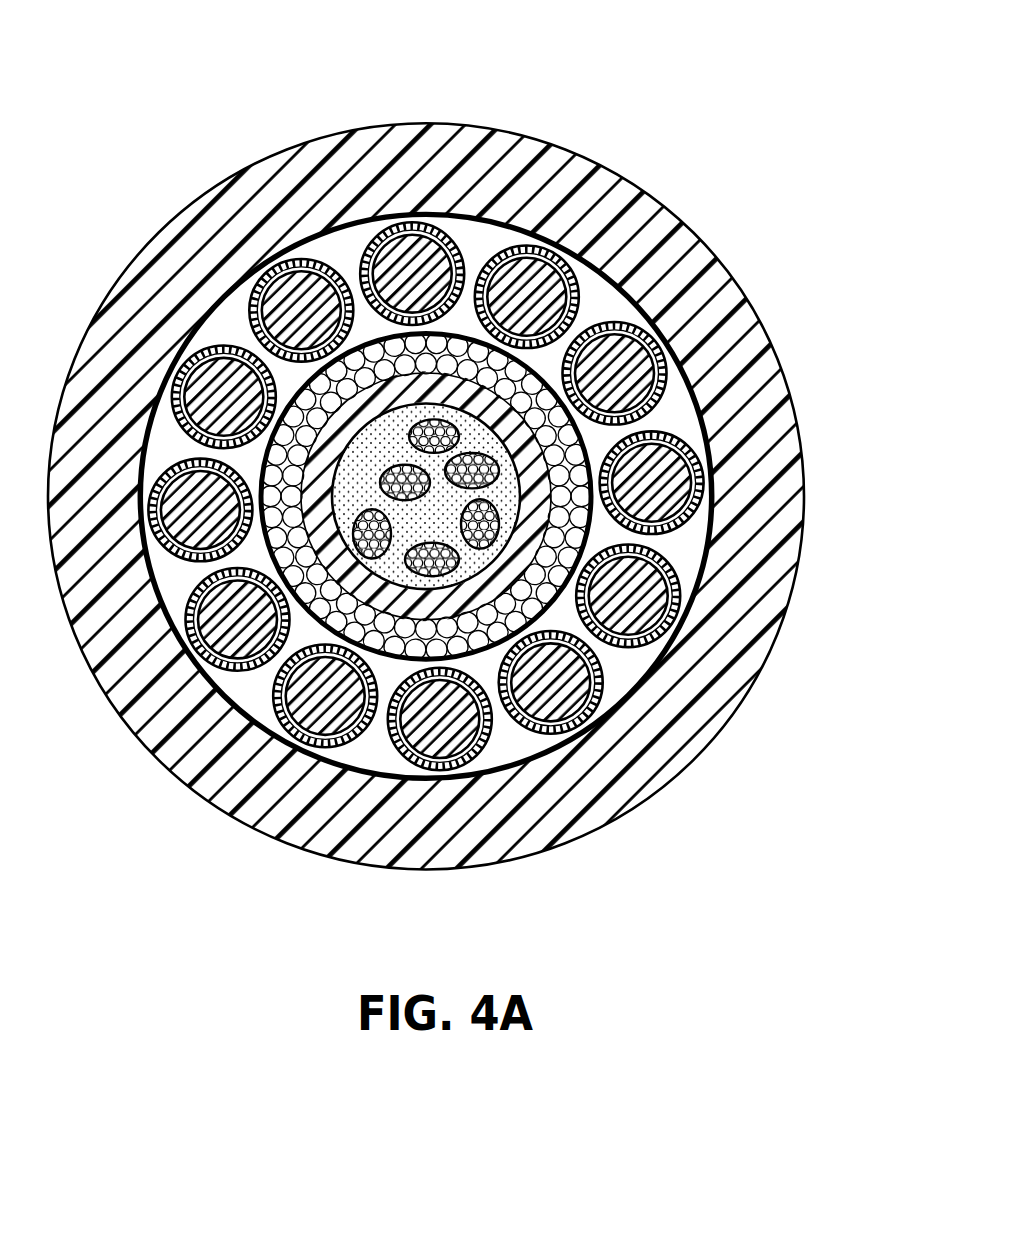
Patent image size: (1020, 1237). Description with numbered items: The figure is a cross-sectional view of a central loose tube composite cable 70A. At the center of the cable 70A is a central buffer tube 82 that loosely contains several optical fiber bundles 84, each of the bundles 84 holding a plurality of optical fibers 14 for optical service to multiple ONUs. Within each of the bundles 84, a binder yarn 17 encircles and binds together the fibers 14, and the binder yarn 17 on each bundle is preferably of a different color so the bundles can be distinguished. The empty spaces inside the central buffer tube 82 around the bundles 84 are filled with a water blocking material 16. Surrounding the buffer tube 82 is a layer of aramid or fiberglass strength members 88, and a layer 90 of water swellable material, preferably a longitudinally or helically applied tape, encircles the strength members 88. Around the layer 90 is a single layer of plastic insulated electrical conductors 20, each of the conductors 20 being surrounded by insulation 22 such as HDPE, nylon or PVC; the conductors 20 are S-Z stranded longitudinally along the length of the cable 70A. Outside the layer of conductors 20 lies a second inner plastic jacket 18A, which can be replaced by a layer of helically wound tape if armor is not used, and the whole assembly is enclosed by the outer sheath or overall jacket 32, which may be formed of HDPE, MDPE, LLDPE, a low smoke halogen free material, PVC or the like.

The composite cable 70A is at (233, 123).
The optical fibers 14 is at (661, 251).
The overall jacket 32 is at (772, 515).
The second inner plastic jacket 18A is at (425, 559).
The insulation 22 is at (312, 257).
The electrical conductors 20 is at (283, 297).
The layer of water swellable material 90 is at (262, 545).
The strength members 88 is at (276, 660).
The optical fiber bundles 84 is at (585, 447).
The central buffer tube 82 is at (478, 637).
The water blocking material 16 is at (483, 563).
The binder yarn 17 is at (517, 482).